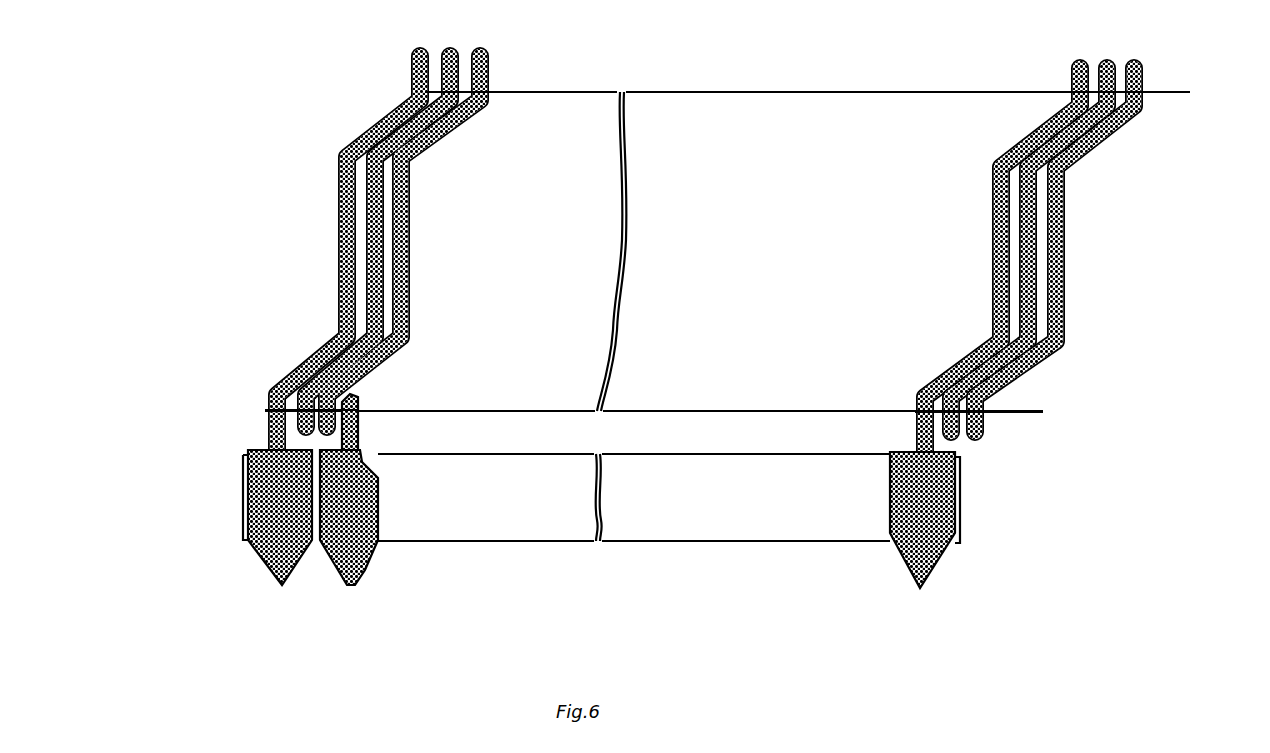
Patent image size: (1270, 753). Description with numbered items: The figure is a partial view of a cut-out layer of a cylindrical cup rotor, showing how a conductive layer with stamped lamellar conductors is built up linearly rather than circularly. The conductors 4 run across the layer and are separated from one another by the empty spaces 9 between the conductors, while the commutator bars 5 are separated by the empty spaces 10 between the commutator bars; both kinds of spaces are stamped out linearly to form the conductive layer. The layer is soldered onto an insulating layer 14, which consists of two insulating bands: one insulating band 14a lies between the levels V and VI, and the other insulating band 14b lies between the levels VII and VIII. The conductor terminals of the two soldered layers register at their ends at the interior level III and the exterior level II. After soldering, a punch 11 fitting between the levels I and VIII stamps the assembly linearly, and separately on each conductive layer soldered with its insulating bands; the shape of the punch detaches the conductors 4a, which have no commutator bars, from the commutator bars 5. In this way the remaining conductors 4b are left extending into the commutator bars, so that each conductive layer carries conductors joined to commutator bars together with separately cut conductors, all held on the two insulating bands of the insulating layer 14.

The conductors 4 is at (1052, 261).
The conductors without commutator bars 4a is at (1053, 190).
The conductors extending into commutator bars 4b is at (1000, 228).
The commutator bars 5 is at (918, 508).
The empty spaces between the conductors 9 is at (360, 209).
The empty spaces between the commutator bars 10 is at (317, 488).
The punch 11 is at (302, 441).
The insulating layer 14 is at (727, 324).
The insulating band 14a is at (817, 120).
The insulating band 14b is at (740, 515).
The level I is at (955, 441).
The exterior level II is at (413, 47).
The interior level III is at (920, 588).
The level V is at (1064, 421).
The level VI is at (1190, 93).
The level VII is at (500, 542).
The level VIII is at (468, 457).